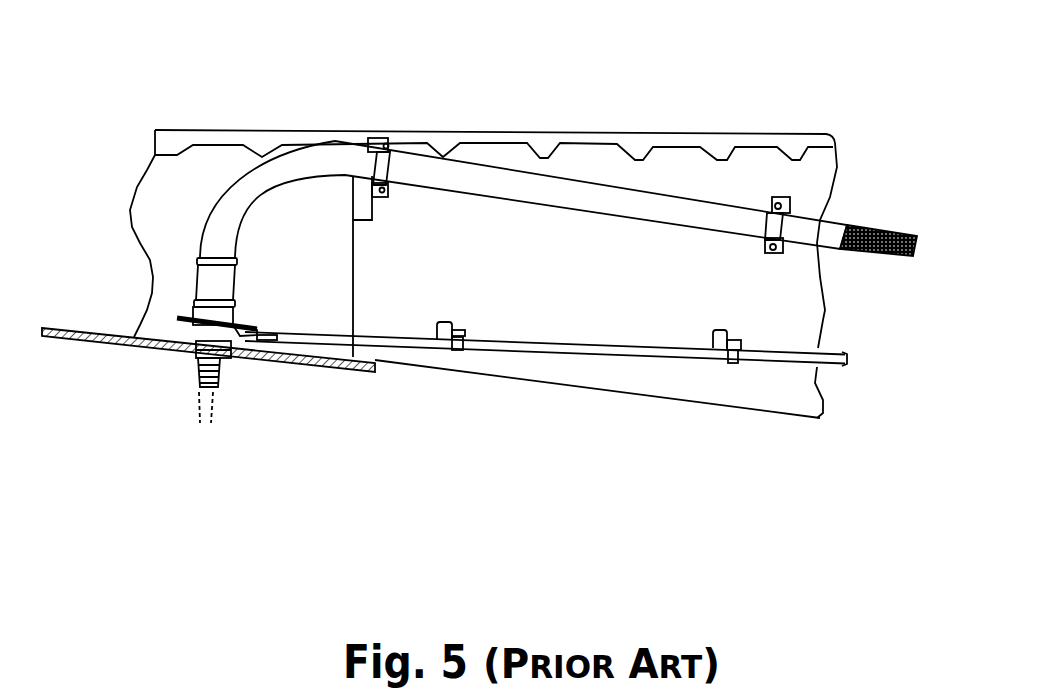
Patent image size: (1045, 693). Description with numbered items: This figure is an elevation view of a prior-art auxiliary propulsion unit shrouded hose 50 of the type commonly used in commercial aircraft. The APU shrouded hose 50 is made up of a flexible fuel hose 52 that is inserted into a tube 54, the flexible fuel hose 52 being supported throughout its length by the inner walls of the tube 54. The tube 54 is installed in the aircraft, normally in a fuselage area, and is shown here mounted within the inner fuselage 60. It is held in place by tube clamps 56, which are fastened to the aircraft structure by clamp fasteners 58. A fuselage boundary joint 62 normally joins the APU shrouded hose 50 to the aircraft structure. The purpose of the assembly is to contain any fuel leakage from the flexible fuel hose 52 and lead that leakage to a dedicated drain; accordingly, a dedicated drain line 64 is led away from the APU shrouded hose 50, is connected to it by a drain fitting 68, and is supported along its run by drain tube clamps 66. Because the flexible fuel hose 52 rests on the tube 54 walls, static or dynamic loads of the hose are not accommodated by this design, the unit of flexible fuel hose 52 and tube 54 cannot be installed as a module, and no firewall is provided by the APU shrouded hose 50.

The APU shrouded hose 50 is at (540, 99).
The flexible fuel hose 52 is at (868, 227).
The tube 54 is at (632, 207).
The tube clamps 56 is at (770, 205).
The clamp fasteners 58 is at (383, 185).
The inner fuselage 60 is at (212, 175).
The fuselage boundary joint 62 is at (145, 343).
The dedicated drain line 64 is at (618, 355).
The drain tube clamps 66 is at (458, 350).
The drain fitting 68 is at (230, 357).